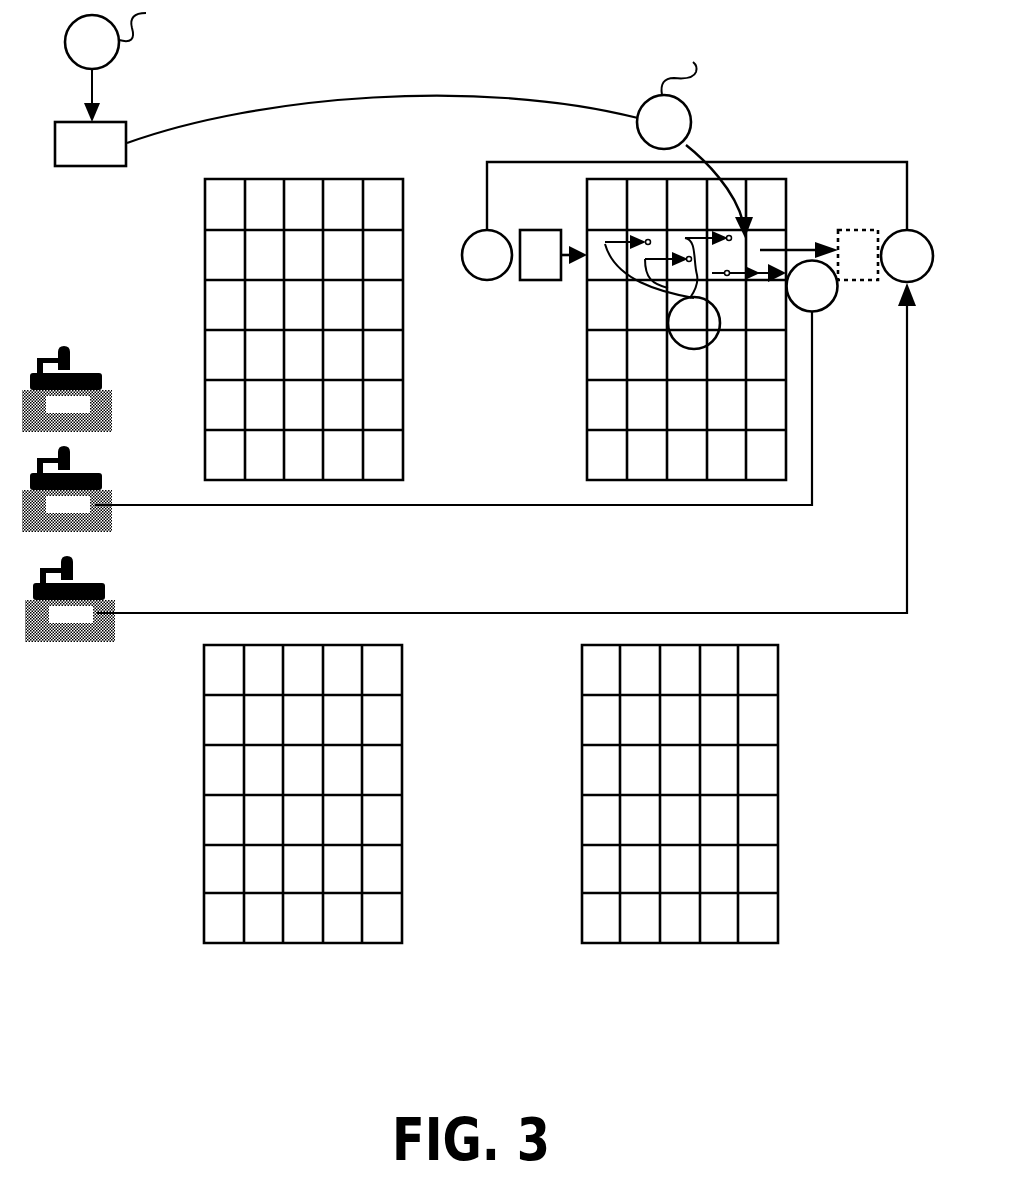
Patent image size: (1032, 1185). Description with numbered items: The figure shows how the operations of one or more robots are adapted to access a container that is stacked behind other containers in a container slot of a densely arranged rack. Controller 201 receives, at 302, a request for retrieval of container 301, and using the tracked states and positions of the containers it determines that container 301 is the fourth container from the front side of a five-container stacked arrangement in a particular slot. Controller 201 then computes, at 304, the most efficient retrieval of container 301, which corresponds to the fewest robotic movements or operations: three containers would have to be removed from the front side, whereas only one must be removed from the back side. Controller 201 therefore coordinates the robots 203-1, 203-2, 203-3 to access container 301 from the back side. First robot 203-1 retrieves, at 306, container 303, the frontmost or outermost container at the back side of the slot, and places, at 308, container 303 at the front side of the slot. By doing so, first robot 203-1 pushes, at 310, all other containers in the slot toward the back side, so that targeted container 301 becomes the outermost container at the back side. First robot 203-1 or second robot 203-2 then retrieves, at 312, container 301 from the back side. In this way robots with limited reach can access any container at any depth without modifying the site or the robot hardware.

The receiving a request 302 is at (237, 63).
The controller 201 is at (346, 131).
The computing a most efficient retrieval 304 is at (673, 128).
The placing container at front side 308 is at (487, 255).
The container 303 is at (699, 255).
The container 301 is at (686, 329).
The pushing other containers 310 is at (695, 290).
The retrieving container from back side 312 is at (812, 286).
The retrieving container 306 is at (907, 256).
The robot 203-3 is at (67, 389).
The second robot 203-2 is at (67, 489).
The first robot 203-1 is at (70, 599).